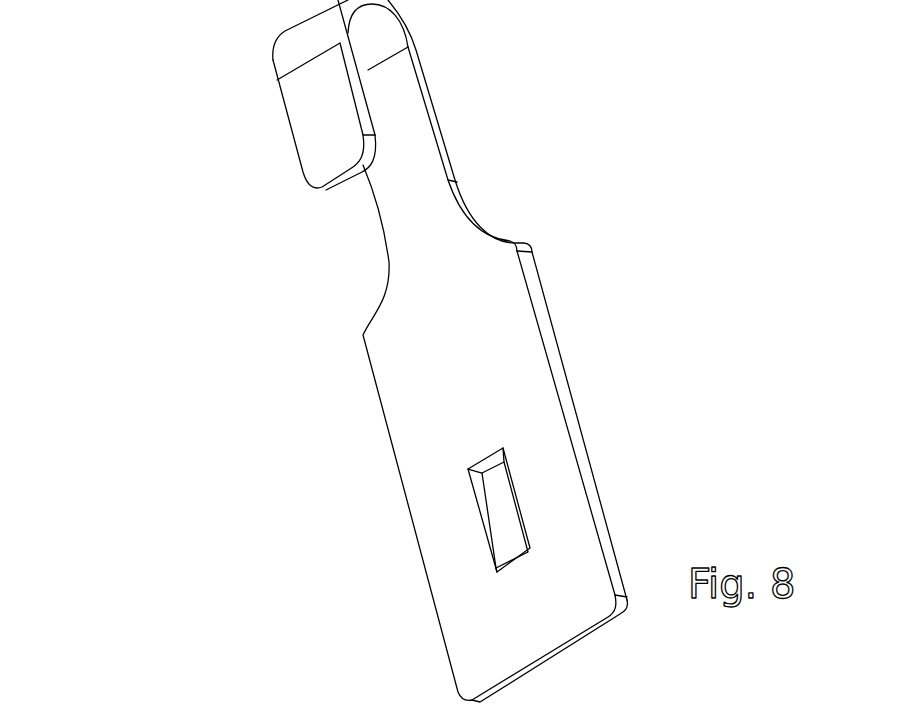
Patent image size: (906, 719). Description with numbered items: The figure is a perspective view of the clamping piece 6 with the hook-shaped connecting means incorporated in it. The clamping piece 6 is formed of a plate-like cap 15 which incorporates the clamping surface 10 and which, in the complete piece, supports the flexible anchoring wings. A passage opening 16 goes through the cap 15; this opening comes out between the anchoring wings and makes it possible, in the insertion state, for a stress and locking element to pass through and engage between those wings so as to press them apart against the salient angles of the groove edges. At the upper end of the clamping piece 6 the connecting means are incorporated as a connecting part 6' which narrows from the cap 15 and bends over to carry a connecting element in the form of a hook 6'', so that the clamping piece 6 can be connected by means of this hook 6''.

The clamping piece 6 is at (376, 359).
The connecting part 6' is at (505, 126).
The hook 6'' is at (225, 95).
The clamping surface 10 is at (475, 433).
The cap 15 is at (505, 400).
The passage opening 16 is at (477, 500).